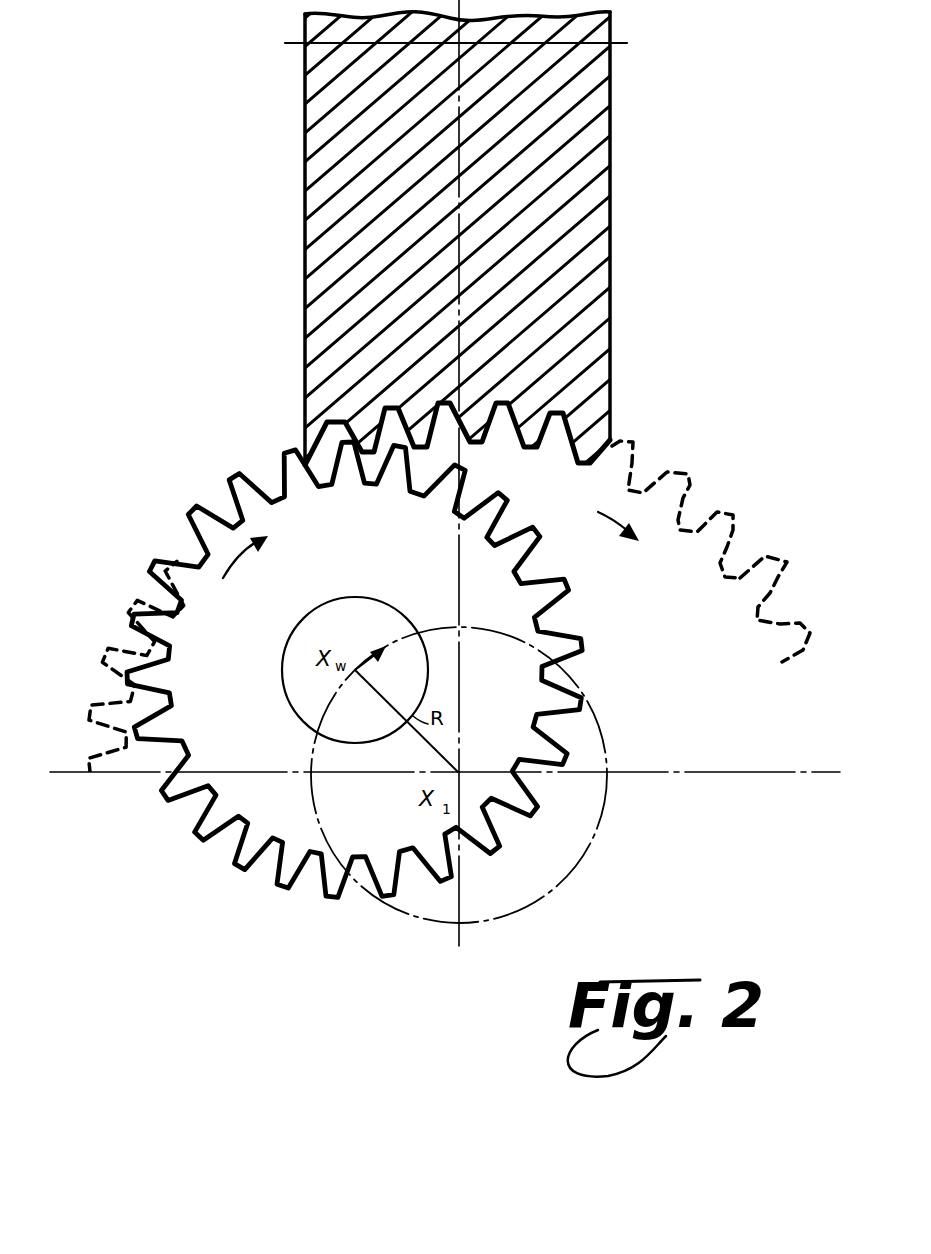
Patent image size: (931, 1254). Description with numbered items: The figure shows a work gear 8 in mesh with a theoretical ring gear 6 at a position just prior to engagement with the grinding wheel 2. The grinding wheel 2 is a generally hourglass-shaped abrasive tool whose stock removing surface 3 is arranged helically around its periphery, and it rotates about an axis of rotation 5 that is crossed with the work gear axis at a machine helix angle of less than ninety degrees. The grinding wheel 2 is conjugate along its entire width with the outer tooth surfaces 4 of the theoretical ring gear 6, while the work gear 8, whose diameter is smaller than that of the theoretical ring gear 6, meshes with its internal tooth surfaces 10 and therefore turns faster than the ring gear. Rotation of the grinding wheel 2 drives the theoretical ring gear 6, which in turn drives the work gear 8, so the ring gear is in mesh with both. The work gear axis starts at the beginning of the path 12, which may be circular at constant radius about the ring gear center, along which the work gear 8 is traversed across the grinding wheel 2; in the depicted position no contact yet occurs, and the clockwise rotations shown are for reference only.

The grinding wheel 2 is at (610, 342).
The stock removing surface 3 is at (372, 395).
The outer tooth surfaces 4 is at (700, 495).
The axis of rotation 5 is at (623, 45).
The theoretical ring gear 6 is at (775, 558).
The work gear 8 is at (350, 533).
The internal tooth surfaces 10 is at (298, 442).
The path 12 is at (592, 837).